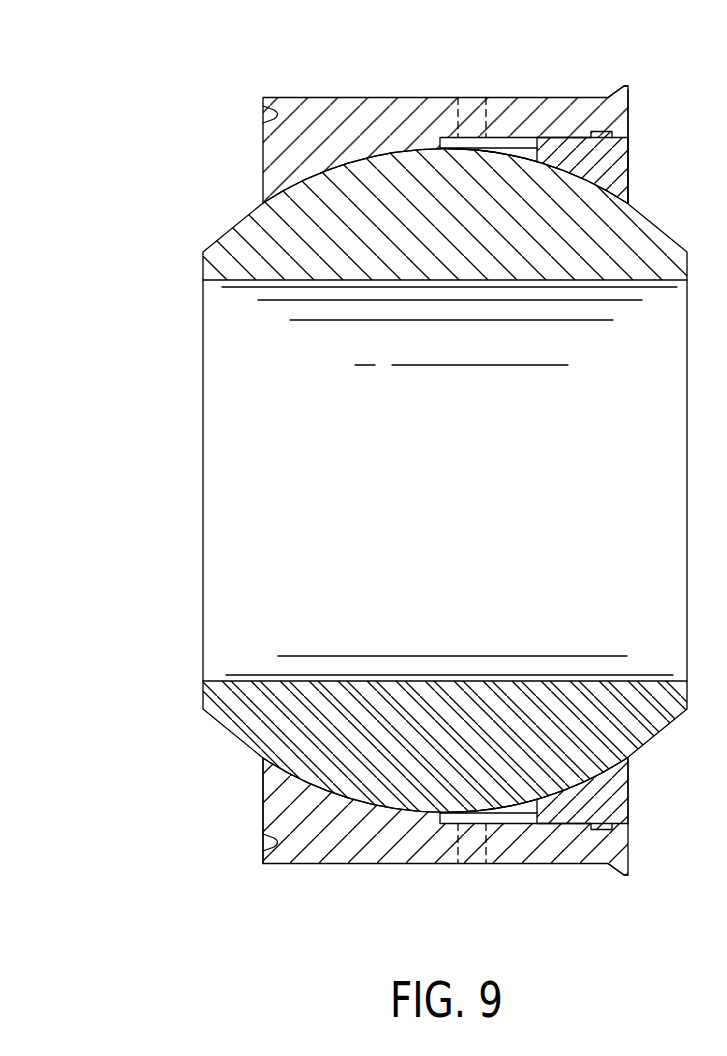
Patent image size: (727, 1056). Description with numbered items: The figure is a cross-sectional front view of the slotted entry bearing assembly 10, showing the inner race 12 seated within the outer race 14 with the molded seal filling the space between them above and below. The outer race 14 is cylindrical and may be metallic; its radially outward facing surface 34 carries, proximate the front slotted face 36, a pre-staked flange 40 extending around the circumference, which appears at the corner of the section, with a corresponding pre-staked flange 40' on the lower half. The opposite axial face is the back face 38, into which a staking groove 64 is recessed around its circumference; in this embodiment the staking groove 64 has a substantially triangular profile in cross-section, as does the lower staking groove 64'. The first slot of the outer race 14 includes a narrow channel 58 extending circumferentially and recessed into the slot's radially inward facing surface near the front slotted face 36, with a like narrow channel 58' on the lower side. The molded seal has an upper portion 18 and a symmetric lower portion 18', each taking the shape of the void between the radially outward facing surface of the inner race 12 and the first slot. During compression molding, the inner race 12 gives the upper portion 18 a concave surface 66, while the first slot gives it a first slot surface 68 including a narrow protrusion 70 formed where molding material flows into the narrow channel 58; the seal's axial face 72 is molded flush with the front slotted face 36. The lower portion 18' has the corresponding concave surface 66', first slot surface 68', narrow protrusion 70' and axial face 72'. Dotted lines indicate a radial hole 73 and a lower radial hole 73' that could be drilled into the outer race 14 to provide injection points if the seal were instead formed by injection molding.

The slotted entry bearing assembly 10 is at (123, 83).
The inner race 12 is at (258, 240).
The outer race 14 is at (385, 840).
The upper portion 18 is at (494, 107).
The radially outward facing surface 34 is at (353, 97).
The front slotted face 36 is at (629, 96).
The back face 38 is at (263, 810).
The pre-staked flange 40 is at (614, 61).
The narrow channel 58 is at (635, 121).
The staking groove 64 is at (245, 84).
The concave surface 66 is at (482, 189).
The first slot surface 68 is at (515, 101).
The narrow protrusion 70 is at (618, 153).
The axial face 72 is at (663, 171).
The radial hole 73 is at (480, 73).
The concave surface 66' is at (484, 774).
The first slot surface 68' is at (515, 862).
The lower portion 18' is at (497, 856).
The narrow protrusion 70' is at (620, 807).
The axial face 72' is at (665, 791).
The narrow channel 58' is at (638, 840).
The pre-staked flange 40' is at (614, 900).
The staking groove 64' is at (246, 878).
The radial hole 73' is at (480, 890).